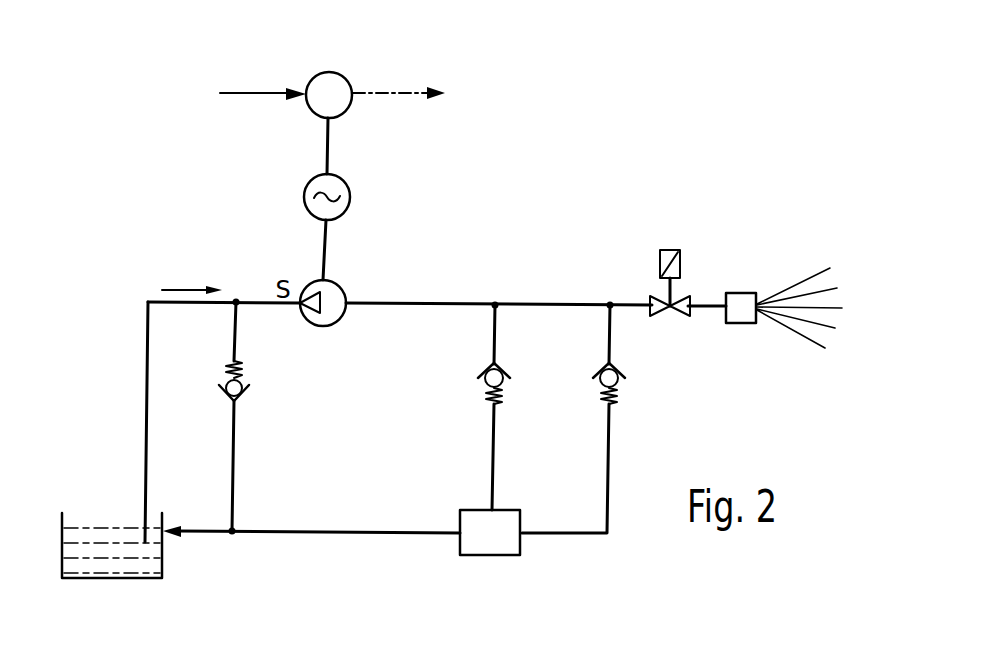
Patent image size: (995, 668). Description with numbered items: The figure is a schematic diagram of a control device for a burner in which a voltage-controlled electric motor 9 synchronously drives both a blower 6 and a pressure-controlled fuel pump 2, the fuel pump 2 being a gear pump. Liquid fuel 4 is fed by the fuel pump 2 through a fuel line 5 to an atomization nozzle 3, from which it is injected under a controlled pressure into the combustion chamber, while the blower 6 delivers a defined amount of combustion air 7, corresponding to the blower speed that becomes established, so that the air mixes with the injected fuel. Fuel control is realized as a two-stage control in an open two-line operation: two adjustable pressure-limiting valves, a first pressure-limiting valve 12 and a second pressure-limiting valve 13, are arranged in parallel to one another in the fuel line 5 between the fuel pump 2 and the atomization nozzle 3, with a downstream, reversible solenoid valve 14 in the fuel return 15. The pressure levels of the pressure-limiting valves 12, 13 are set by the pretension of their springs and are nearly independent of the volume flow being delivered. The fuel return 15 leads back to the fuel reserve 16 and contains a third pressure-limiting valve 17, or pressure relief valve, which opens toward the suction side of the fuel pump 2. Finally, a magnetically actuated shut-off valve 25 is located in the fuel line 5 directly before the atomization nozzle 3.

The fuel pump 2 is at (330, 311).
The atomization nozzle 3 is at (742, 292).
The liquid fuel 4 is at (830, 309).
The fuel line 5 is at (435, 303).
The blower 6 is at (331, 82).
The combustion air 7 is at (390, 88).
The electric motor 9 is at (350, 197).
The first pressure-limiting valve 12 is at (485, 380).
The second pressure-limiting valve 13 is at (620, 381).
The solenoid valve 14 is at (490, 546).
The fuel return 15 is at (333, 534).
The fuel reserve 16 is at (110, 568).
The third pressure-limiting valve 17 is at (245, 384).
The shut-off valve 25 is at (671, 248).